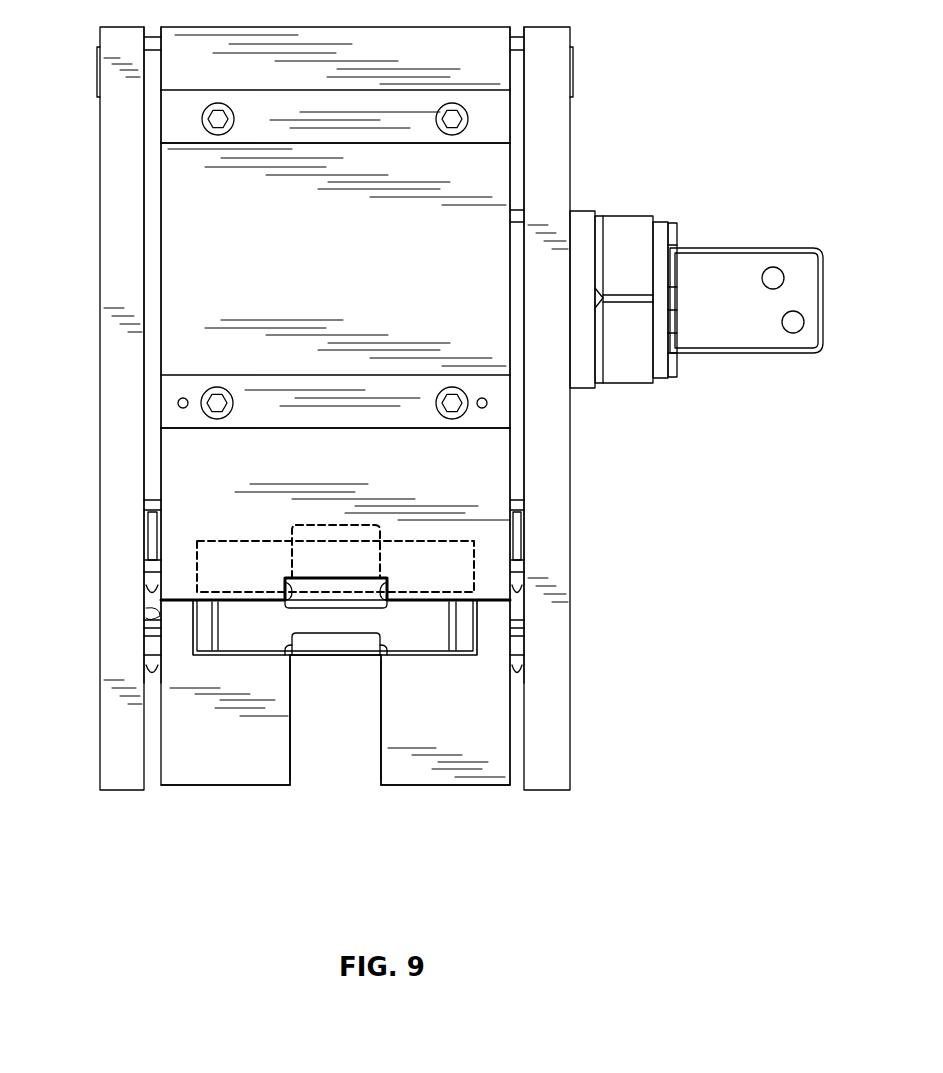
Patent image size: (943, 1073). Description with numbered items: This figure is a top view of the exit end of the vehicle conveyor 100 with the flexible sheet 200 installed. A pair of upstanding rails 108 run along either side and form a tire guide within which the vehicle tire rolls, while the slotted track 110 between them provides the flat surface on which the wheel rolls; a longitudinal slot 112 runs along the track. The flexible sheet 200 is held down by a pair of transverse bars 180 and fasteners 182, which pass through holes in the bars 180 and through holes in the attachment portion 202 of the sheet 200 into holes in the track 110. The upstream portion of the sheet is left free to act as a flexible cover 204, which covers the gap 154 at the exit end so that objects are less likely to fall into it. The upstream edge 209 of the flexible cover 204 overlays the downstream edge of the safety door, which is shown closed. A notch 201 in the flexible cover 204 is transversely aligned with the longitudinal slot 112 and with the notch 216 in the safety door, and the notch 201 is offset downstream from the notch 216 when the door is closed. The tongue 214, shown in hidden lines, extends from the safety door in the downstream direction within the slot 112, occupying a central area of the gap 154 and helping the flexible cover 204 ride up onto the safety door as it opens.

The vehicle conveyor 100 is at (426, 468).
The upstanding rails 108 is at (130, 790).
The slotted track 110 is at (462, 785).
The slot 112 is at (342, 762).
The gap 154 is at (238, 580).
The transverse bars 180 is at (182, 122).
The fasteners 182 is at (233, 116).
The flexible sheet 200 is at (283, 310).
The notch 201 is at (333, 612).
The attachment portion 202 is at (275, 200).
The flexible cover 204 is at (327, 516).
The upstream edge 209 is at (470, 602).
The tongue 214 is at (323, 593).
The notch 216 is at (333, 655).